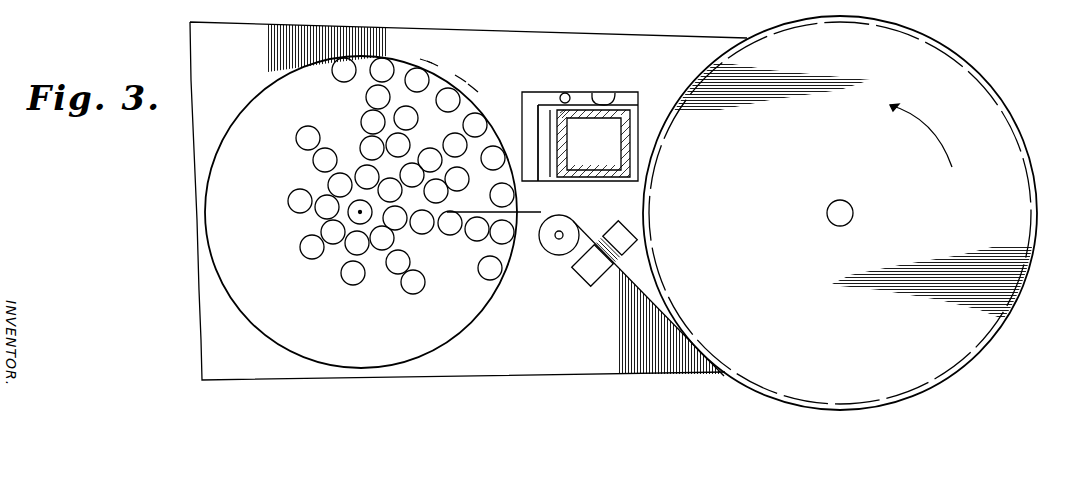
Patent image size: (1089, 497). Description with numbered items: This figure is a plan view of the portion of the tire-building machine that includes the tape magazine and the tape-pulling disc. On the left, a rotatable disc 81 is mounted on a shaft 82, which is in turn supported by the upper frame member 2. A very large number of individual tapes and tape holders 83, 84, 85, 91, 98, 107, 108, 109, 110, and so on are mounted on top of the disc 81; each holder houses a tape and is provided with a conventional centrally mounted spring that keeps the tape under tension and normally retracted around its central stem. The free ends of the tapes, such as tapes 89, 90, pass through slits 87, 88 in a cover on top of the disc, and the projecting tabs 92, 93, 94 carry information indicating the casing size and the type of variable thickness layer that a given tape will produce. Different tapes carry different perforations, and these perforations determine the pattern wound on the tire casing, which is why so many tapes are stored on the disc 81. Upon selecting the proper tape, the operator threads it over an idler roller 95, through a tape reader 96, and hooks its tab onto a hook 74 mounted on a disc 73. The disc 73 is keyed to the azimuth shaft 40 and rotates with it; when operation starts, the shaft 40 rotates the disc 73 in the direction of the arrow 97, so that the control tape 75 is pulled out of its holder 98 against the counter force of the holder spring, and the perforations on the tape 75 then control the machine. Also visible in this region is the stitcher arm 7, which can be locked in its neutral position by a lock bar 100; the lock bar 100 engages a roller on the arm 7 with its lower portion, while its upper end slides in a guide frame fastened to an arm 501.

The upper frame member 2 is at (648, 40).
The stitcher arm 7 is at (538, 107).
The azimuth shaft 40 is at (835, 220).
The disc 73 is at (959, 83).
The hook 74 is at (1030, 147).
The control tape 75 is at (626, 278).
The rotatable disc 81 is at (623, 80).
The shaft 82 is at (358, 213).
The tape holder 83 is at (410, 73).
The tape holder 84 is at (386, 60).
The tape holder 85 is at (344, 63).
The slit 87 is at (428, 70).
The slit 88 is at (474, 88).
The tape 89 is at (438, 54).
The tape 90 is at (462, 82).
The tape holder 91 is at (444, 106).
The projecting tab 92 is at (487, 118).
The projecting tab 93 is at (525, 173).
The projecting tab 94 is at (519, 194).
The idler roller 95 is at (559, 255).
The tape reader 96 is at (602, 235).
The arrow 97 is at (924, 125).
The tape holder 98 is at (455, 235).
The lock bar 100 is at (568, 94).
The tape holder 107 is at (505, 241).
The tape holder 108 is at (413, 296).
The tape holder 109 is at (298, 141).
The tape holder 110 is at (366, 97).
The arm 501 is at (565, 143).